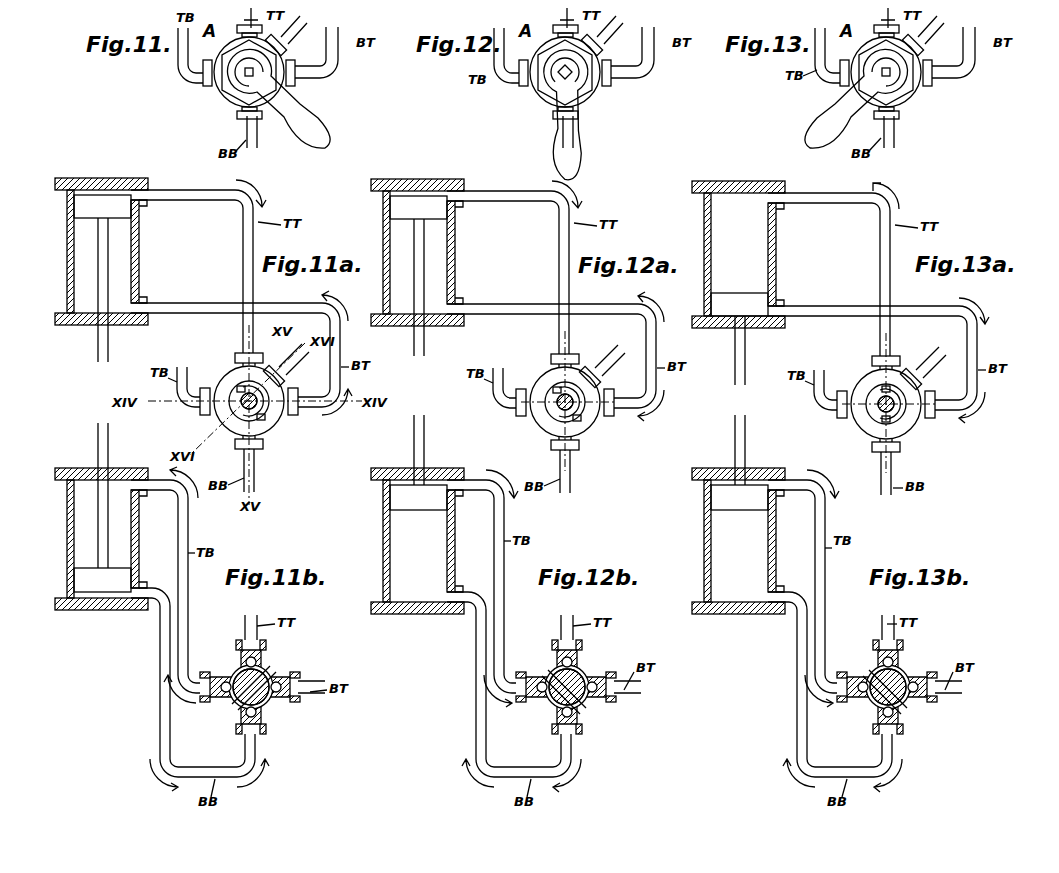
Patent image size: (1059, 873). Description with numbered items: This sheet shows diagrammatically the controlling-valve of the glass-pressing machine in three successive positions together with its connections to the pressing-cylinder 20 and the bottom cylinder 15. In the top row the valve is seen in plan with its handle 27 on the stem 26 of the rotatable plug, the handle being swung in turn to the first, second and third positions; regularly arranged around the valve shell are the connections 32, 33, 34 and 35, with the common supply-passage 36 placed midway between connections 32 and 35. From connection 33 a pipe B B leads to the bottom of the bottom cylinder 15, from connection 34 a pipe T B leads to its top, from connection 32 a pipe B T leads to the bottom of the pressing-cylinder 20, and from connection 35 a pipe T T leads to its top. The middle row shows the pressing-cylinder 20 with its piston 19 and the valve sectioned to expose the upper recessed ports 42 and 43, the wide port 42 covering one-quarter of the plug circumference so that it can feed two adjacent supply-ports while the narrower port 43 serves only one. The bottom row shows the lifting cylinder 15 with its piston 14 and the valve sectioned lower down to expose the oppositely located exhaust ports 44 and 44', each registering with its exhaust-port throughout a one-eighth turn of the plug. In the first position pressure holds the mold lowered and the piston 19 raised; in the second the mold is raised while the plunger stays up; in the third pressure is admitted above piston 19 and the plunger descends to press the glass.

In FIG. 11B, the piston 14 is at (102, 580).
In FIG. 12B, the piston 14 is at (418, 497).
In FIG. 13B, the piston 14 is at (739, 497).
In FIG. 11B, the bottom cylinder 15 is at (67, 534).
In FIG. 12B, the bottom cylinder 15 is at (409, 541).
In FIG. 13B, the bottom cylinder 15 is at (730, 541).
In FIG. 11A, the piston 19 is at (102, 206).
In FIG. 12A, the piston 19 is at (418, 207).
In FIG. 13A, the piston 19 is at (739, 304).
In FIG. 11A, the pressing-cylinder 20 is at (67, 268).
In FIG. 12A, the pressing-cylinder 20 is at (408, 252).
In FIG. 13A, the pressing-cylinder 20 is at (731, 254).
In FIG. 11A, the stem 26 is at (242, 398).
In FIG. 12A, the stem 26 is at (543, 390).
In FIG. 13A, the stem 26 is at (864, 392).
In FIG. 11, the handle 27 is at (279, 98).
In FIG. 12, the handle 27 is at (567, 112).
In FIG. 13, the handle 27 is at (856, 98).
In FIG. 11, the valve connection 32 is at (295, 80).
In FIG. 11A, the valve connection 32 is at (284, 420).
In FIG. 11B, the valve connection 32 is at (290, 704).
In FIG. 12, the valve connection 32 is at (618, 81).
In FIG. 12A, the valve connection 32 is at (613, 415).
In FIG. 12B, the valve connection 32 is at (620, 699).
In FIG. 13, the valve connection 32 is at (944, 81).
In FIG. 13A, the valve connection 32 is at (934, 417).
In FIG. 13B, the valve connection 32 is at (946, 699).
In FIG. 11, the valve connection 33 is at (240, 115).
In FIG. 11A, the valve connection 33 is at (240, 447).
In FIG. 11B, the valve connection 33 is at (266, 733).
In FIG. 12, the valve connection 33 is at (547, 119).
In FIG. 12A, the valve connection 33 is at (550, 453).
In FIG. 12B, the valve connection 33 is at (583, 740).
In FIG. 13, the valve connection 33 is at (901, 124).
In FIG. 13A, the valve connection 33 is at (868, 454).
In FIG. 13B, the valve connection 33 is at (905, 740).
In FIG. 11, the valve connection 34 is at (206, 82).
In FIG. 11A, the valve connection 34 is at (203, 410).
In FIG. 11B, the valve connection 34 is at (206, 704).
In FIG. 12, the valve connection 34 is at (507, 85).
In FIG. 12A, the valve connection 34 is at (507, 410).
In FIG. 12B, the valve connection 34 is at (509, 699).
In FIG. 13, the valve connection 34 is at (826, 82).
In FIG. 13A, the valve connection 34 is at (828, 412).
In FIG. 13B, the valve connection 34 is at (830, 699).
In FIG. 11, the valve connection 35 is at (243, 27).
In FIG. 11A, the valve connection 35 is at (236, 358).
In FIG. 11B, the valve connection 35 is at (236, 646).
In FIG. 12, the valve connection 35 is at (553, 23).
In FIG. 12A, the valve connection 35 is at (546, 355).
In FIG. 12B, the valve connection 35 is at (551, 637).
In FIG. 13, the valve connection 35 is at (874, 23).
In FIG. 13A, the valve connection 35 is at (867, 357).
In FIG. 13B, the valve connection 35 is at (871, 635).
In FIG. 11, the common supply-passage 36 is at (288, 43).
In FIG. 11A, the common supply-passage 36 is at (290, 378).
In FIG. 12, the common supply-passage 36 is at (610, 36).
In FIG. 12A, the common supply-passage 36 is at (611, 366).
In FIG. 13, the common supply-passage 36 is at (931, 36).
In FIG. 13A, the common supply-passage 36 is at (932, 368).
In FIG. 11A, the recessed port 42 is at (262, 424).
In FIG. 12A, the recessed port 42 is at (591, 438).
In FIG. 13A, the recessed port 42 is at (906, 440).
In FIG. 11A, the recessed port 43 is at (236, 412).
In FIG. 12A, the recessed port 43 is at (574, 362).
In FIG. 13A, the recessed port 43 is at (899, 362).
In FIG. 11B, the recessed port 44 is at (234, 708).
In FIG. 12B, the recessed port 44 is at (548, 708).
In FIG. 13B, the recessed port 44 is at (870, 676).
In FIG. 11B, the recessed port 44' is at (236, 679).
In FIG. 12B, the recessed port 44' is at (580, 681).
In FIG. 13B, the recessed port 44' is at (904, 674).